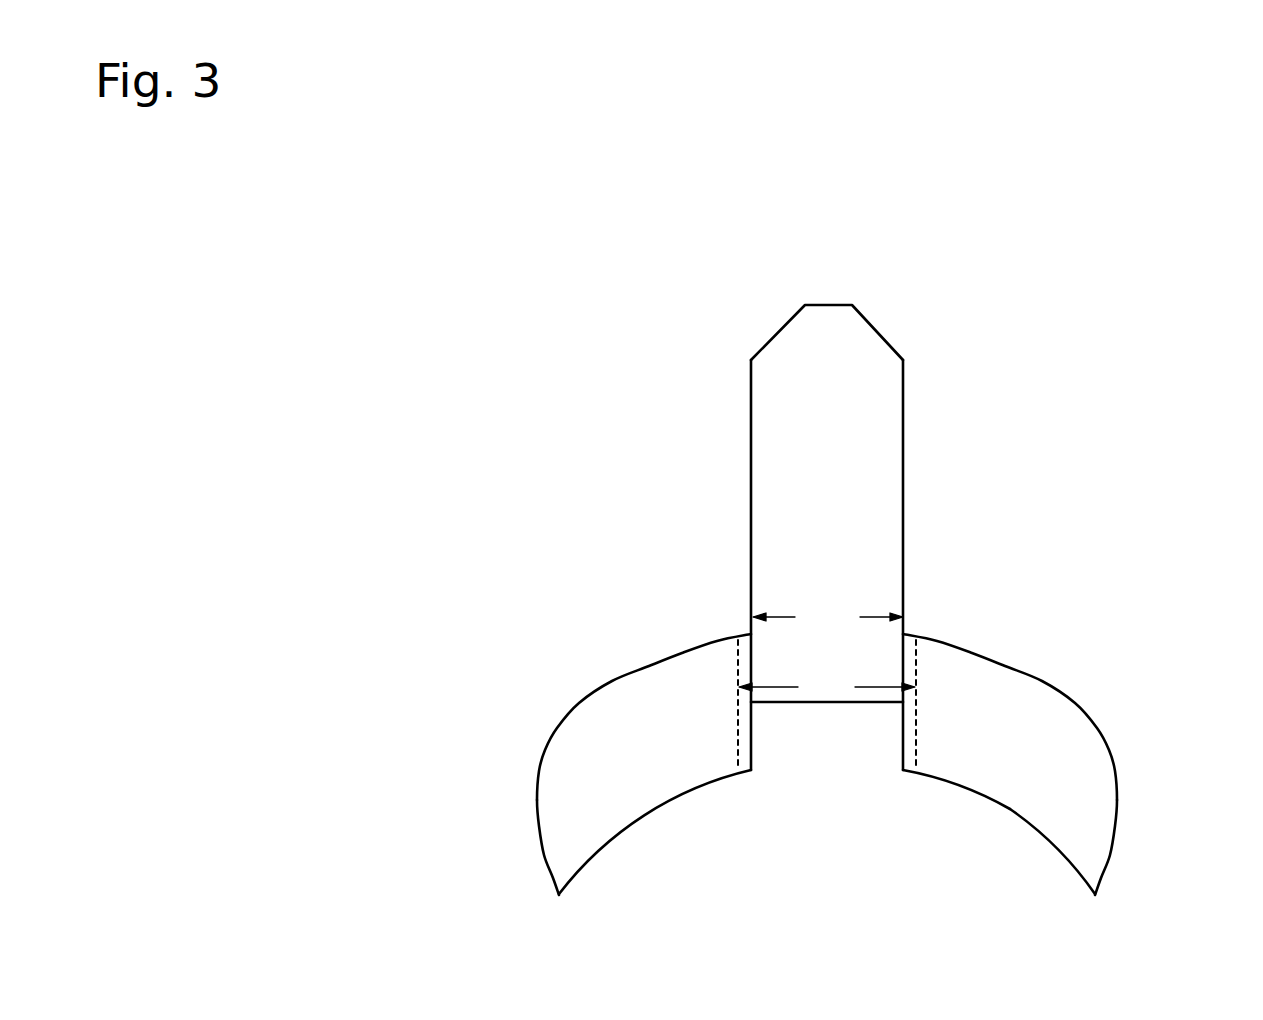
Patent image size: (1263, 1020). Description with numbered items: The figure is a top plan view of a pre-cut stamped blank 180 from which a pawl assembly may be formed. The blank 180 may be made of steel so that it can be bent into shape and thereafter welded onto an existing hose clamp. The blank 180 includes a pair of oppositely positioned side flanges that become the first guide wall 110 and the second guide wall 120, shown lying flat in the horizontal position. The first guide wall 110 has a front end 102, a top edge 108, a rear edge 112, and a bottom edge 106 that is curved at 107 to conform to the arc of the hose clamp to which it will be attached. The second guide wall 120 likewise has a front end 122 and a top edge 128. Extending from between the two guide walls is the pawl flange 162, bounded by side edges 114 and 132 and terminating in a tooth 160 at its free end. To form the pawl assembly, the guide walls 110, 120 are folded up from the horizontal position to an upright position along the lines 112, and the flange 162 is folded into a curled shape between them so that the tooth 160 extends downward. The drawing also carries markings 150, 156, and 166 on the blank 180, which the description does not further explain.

The front end 102 is at (1112, 848).
The bottom edge 106 is at (1017, 820).
The curve 107 is at (957, 787).
The top edge 108 is at (1005, 660).
The first guide wall 110 is at (1059, 755).
The rear edge 112 is at (919, 674).
The side edge 114 is at (905, 504).
The second guide wall 120 is at (596, 756).
The front end 122 is at (548, 852).
The top edge 128 is at (628, 668).
The side edge 132 is at (749, 499).
The fold line 150 is at (827, 705).
The tab width 156 is at (828, 618).
The tooth 160 is at (833, 304).
The pawl flange 162 is at (848, 462).
The base neck width 166 is at (827, 688).
The stamped blank 180 is at (828, 584).